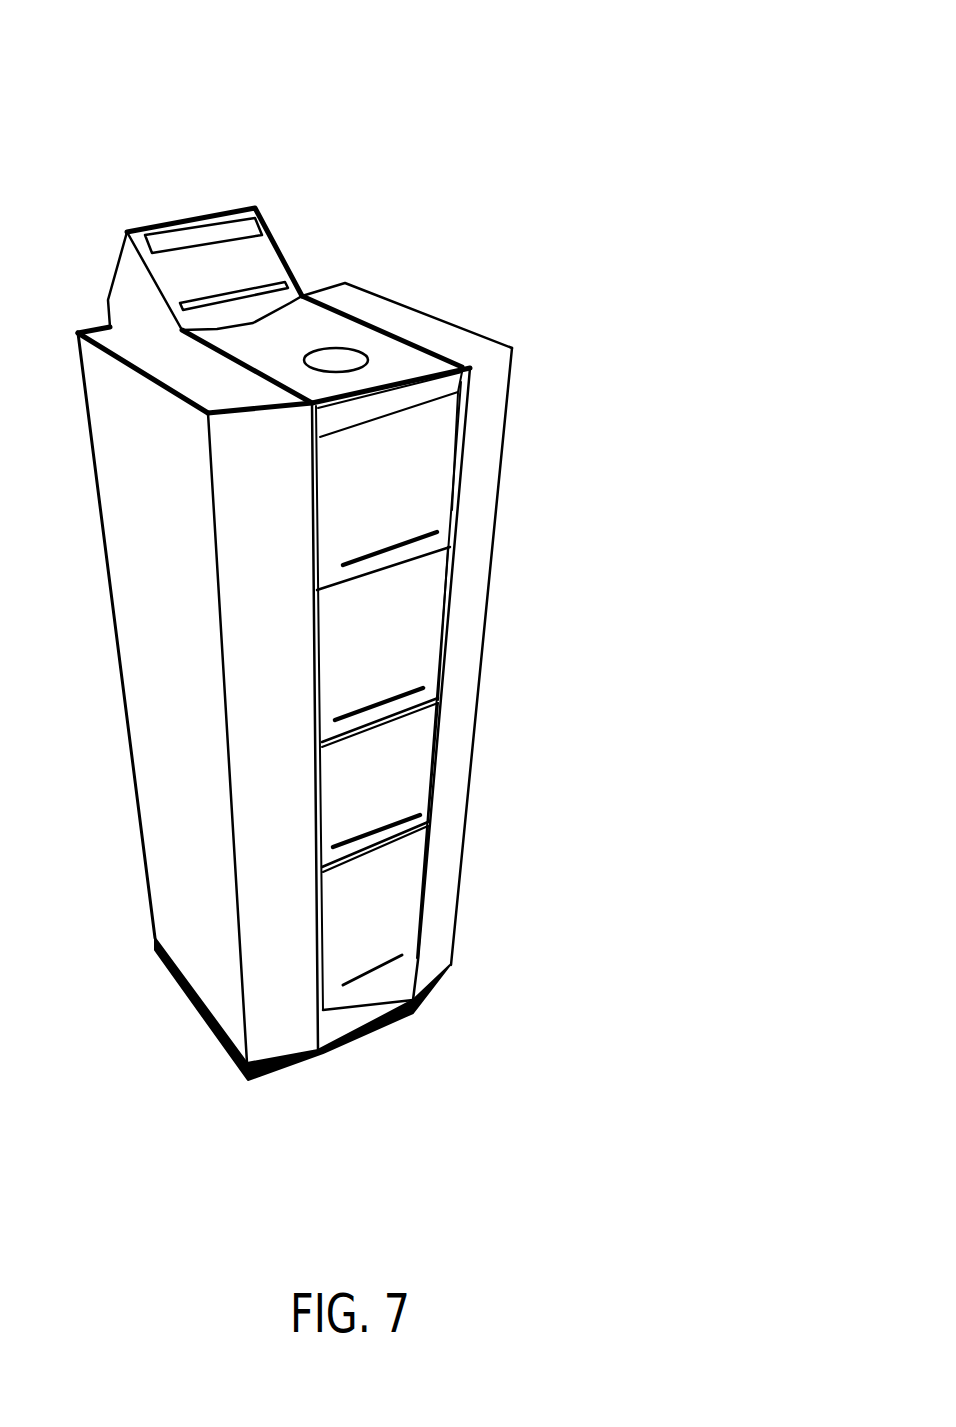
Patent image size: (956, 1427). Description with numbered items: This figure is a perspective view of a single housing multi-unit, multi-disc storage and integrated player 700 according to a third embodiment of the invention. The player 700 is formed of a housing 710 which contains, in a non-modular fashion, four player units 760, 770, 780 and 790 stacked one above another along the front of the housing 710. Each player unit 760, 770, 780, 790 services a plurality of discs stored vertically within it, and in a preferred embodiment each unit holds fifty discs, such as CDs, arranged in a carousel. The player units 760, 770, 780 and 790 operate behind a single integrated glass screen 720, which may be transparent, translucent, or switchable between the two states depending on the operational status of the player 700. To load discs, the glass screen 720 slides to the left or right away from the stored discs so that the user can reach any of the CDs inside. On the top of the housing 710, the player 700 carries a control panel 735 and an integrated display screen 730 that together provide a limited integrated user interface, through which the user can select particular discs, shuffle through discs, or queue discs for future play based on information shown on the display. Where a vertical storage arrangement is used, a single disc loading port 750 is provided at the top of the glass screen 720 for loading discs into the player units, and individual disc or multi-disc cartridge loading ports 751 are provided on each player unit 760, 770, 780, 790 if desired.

The single housing multi-unit, multi-disc storage and integrated player 700 is at (576, 155).
The housing 710 is at (461, 771).
The integrated glass screen 720 is at (405, 627).
The integrated display screen 730 is at (233, 262).
The control panel 735 is at (343, 358).
The single disc loading port 750 is at (412, 398).
The individual disc or multi-disc cartridge loading ports 751 is at (437, 533).
The player unit 760 is at (412, 492).
The player unit 770 is at (380, 657).
The player unit 780 is at (395, 762).
The player unit 790 is at (383, 910).